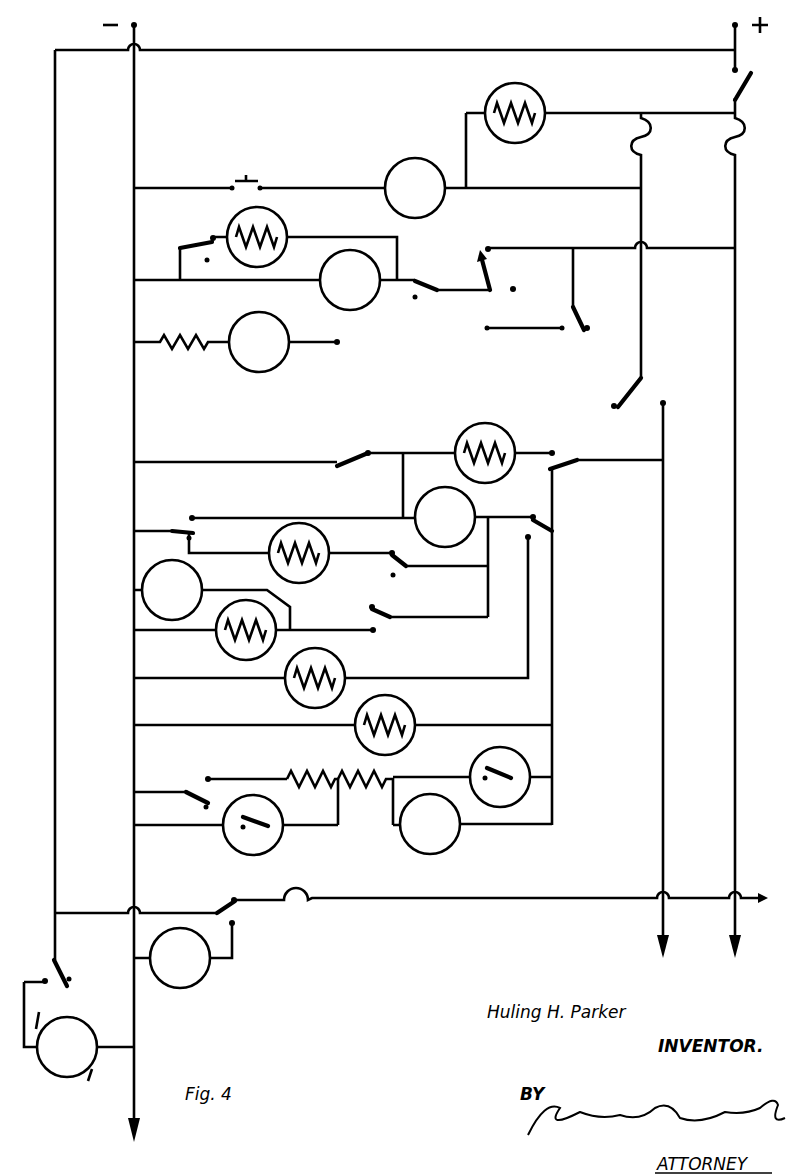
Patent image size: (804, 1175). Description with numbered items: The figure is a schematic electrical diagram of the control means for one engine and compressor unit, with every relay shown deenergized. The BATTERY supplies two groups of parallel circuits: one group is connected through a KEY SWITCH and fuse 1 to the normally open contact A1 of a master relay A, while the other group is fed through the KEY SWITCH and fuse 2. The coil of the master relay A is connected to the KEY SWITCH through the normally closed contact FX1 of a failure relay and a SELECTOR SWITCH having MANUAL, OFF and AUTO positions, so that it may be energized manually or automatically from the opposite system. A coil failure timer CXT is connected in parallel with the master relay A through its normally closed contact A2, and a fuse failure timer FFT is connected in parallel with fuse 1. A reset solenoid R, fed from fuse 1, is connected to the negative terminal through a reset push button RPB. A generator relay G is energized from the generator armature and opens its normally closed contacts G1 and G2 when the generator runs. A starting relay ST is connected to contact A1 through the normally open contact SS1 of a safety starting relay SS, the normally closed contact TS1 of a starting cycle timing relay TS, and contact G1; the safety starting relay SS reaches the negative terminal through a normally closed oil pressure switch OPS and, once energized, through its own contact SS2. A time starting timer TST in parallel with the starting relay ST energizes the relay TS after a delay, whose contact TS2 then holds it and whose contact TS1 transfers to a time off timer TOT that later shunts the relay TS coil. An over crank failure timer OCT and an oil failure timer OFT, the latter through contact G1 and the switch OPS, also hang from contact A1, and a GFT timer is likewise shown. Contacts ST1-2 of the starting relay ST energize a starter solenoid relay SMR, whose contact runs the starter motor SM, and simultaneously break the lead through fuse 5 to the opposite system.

The battery BATTERY is at (411, 579).
The key operable switch KEY SWITCH is at (733, 92).
The fuse 1 is at (632, 148).
The fuse 2 is at (726, 150).
The fuse failure timer FFT is at (492, 94).
The reset push button RPB is at (257, 180).
The reset solenoid R is at (405, 160).
The manual position of selector switch MANUAL is at (610, 239).
The selector switch SELECTOR SWITCH is at (490, 298).
The off position of selector switch OFF is at (532, 284).
The automatic position of selector switch AUTO is at (525, 318).
The coil failure timer CXT is at (287, 222).
The normally closed contact of master relay A2 is at (192, 245).
The master relay A is at (373, 306).
The normally closed contact of failure relay FX1 is at (426, 287).
The generator relay G is at (241, 364).
The normally open contact of master relay A1 is at (630, 398).
The oil pressure switch OPS is at (357, 456).
The oil failure timer OFT is at (508, 434).
The normally closed contact of generator relay G1 is at (560, 470).
The normally open contact of safety starting relay SS2 is at (180, 528).
The safety starting relay SS is at (450, 488).
The normally closed contact of starting cycle timing relay TS1 is at (536, 512).
The GFT relay coil GFT is at (294, 583).
The normally closed contact of generator relay G2 is at (402, 572).
The starting relay ST is at (202, 570).
The time starting timer TST is at (215, 650).
The normally open contact of safety starting relay SS1 is at (385, 620).
The time off timer TOT is at (290, 700).
The over crank failure timer OCT is at (412, 703).
The normally open contact of starting cycle timing relay TS2 is at (204, 792).
The starting cycle timing relay TS is at (455, 840).
The contacts of starting relay ST1-2 is at (231, 898).
The fuse 5 is at (305, 895).
The starter motor SM is at (58, 1080).
The starter solenoid relay SMR is at (70, 978).